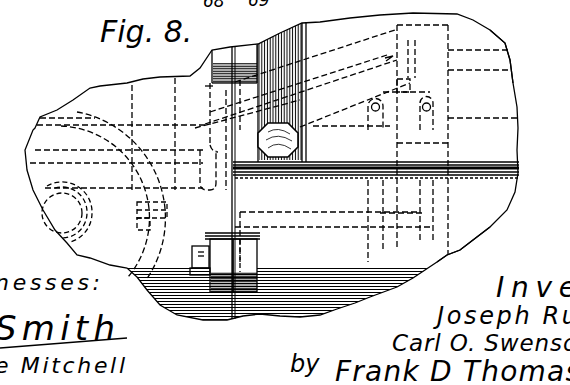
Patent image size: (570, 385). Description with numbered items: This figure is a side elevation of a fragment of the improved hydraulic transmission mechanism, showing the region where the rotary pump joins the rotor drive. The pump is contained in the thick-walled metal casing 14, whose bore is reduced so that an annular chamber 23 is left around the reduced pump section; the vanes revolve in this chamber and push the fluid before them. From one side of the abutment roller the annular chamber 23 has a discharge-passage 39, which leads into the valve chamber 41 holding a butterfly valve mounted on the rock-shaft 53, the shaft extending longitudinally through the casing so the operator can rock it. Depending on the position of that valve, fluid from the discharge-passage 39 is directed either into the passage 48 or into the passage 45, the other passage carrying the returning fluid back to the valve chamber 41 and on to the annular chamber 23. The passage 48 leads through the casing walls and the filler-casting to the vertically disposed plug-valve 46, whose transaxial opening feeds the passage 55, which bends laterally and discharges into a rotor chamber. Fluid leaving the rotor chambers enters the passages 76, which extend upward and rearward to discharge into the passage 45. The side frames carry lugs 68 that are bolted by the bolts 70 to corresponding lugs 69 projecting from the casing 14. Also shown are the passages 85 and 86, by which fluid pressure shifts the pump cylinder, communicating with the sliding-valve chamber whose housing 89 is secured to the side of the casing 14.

The metal casing 14 is at (327, 205).
The annular chamber 23 is at (447, 233).
The discharge-passage 39 is at (402, 97).
The valve chamber 41 is at (453, 35).
The passage 45 is at (320, 107).
The plug-valve 46 is at (172, 96).
The passage 48 is at (340, 45).
The rock-shaft 53 is at (492, 50).
The passage 55 is at (115, 125).
The lug 68 is at (227, 60).
The lug 69 is at (245, 58).
The bolt 70 is at (203, 275).
The passage 76 is at (107, 190).
The passage 85 is at (370, 198).
The passage 86 is at (433, 203).
The housing 89 is at (457, 114).